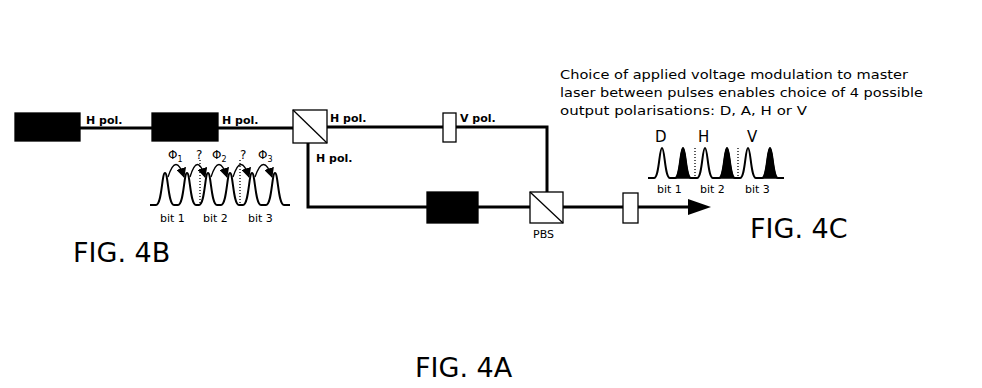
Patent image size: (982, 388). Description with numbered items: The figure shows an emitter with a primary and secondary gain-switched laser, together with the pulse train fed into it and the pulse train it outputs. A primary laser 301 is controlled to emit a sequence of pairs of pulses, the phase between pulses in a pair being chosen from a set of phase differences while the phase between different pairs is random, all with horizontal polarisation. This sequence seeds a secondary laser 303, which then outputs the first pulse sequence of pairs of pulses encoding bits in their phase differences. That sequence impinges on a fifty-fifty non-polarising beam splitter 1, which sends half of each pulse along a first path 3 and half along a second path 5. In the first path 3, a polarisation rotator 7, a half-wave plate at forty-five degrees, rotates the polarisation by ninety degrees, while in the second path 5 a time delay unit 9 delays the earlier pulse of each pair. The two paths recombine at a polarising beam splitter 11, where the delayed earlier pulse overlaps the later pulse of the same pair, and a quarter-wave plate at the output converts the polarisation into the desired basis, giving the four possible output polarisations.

The primary laser 301 is at (47, 107).
The secondary laser 303 is at (185, 107).
The beam splitter 1 is at (310, 108).
The first path 3 is at (374, 92).
The second path 5 is at (330, 227).
The polarisation rotator 7 is at (448, 90).
The time delay unit 9 is at (472, 248).
The polarising beam splitter 11 is at (589, 250).